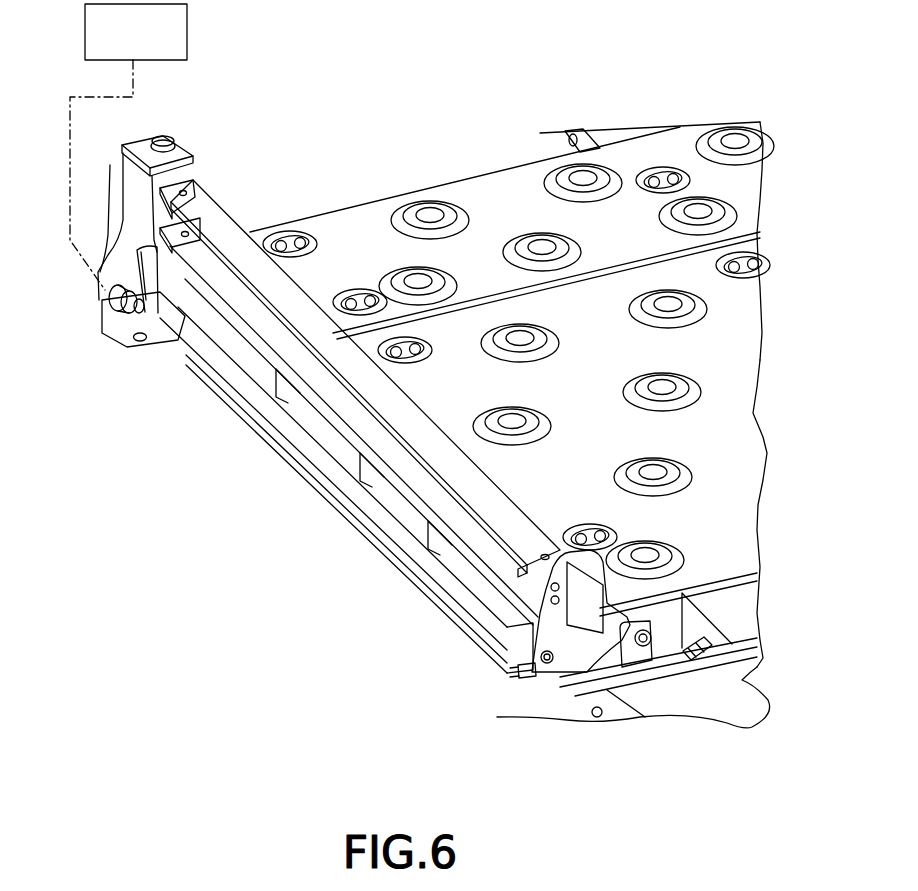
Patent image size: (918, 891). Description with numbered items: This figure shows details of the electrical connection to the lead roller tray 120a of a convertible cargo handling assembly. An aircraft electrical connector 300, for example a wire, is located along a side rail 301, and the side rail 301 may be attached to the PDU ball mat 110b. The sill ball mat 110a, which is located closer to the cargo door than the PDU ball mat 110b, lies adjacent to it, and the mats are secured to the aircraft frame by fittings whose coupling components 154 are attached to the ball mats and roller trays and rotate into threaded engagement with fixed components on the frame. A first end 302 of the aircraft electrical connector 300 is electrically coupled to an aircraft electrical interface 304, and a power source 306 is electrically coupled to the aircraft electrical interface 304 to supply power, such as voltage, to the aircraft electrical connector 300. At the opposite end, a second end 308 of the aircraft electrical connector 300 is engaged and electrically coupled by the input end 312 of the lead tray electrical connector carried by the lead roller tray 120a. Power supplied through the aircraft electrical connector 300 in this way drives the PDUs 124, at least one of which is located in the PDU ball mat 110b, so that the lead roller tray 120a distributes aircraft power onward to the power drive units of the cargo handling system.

The power source 306 is at (117, 44).
The side rail 301 is at (223, 217).
The coupling component 154 is at (290, 233).
The aircraft electrical interface 304 is at (107, 305).
The first end 302 is at (133, 310).
The aircraft electrical connector 300 is at (267, 400).
The sill ball mat 110a is at (545, 216).
The PDU ball mat 110b is at (610, 404).
The PDU 124 is at (735, 618).
The second end 308 is at (530, 667).
The input end 312 is at (537, 690).
The lead roller tray 120a is at (572, 703).